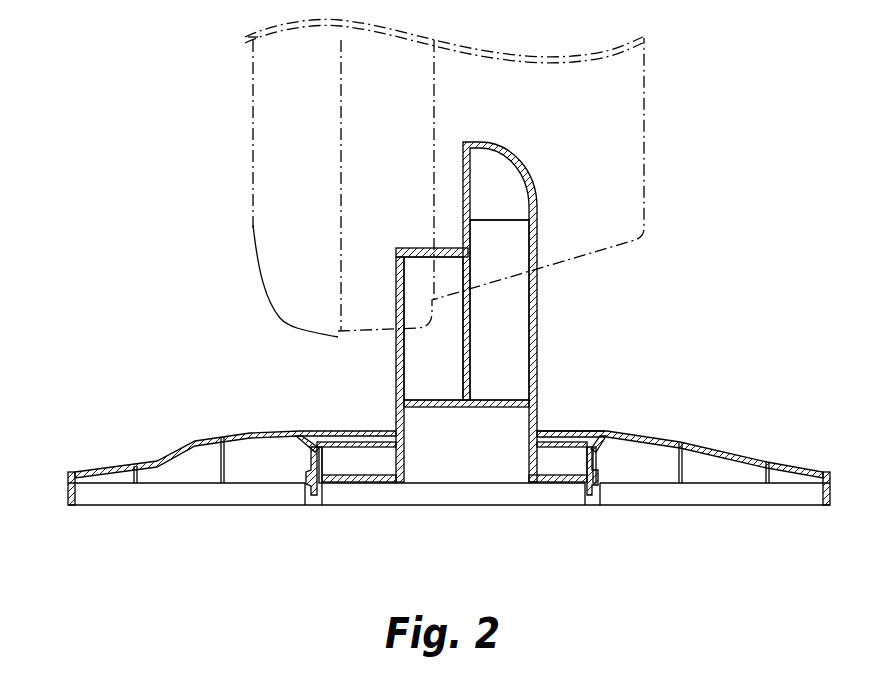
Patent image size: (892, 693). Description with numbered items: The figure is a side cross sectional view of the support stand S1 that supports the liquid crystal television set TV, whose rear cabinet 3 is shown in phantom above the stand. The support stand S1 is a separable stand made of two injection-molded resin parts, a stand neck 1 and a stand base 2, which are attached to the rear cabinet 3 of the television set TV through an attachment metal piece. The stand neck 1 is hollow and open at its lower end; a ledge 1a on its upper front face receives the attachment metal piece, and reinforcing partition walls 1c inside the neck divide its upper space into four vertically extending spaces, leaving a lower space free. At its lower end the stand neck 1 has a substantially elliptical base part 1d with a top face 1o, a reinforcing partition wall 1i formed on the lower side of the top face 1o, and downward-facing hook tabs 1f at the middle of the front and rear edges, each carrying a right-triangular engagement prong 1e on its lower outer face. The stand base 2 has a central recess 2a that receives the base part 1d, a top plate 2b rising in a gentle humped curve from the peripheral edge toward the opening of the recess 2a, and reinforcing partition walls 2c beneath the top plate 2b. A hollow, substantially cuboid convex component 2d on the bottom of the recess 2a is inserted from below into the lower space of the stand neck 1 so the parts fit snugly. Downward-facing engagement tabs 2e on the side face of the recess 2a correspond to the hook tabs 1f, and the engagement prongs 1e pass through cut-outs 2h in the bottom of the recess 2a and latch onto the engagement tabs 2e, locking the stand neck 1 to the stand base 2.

The liquid crystal television set TV is at (238, 63).
The rear cabinet 3 is at (648, 90).
The support stand S1 is at (156, 339).
The stand neck 1 is at (537, 303).
The ledge 1a is at (415, 247).
The reinforcing partition walls 1c is at (469, 347).
The base part 1d is at (570, 443).
The engagement prong 1e is at (302, 485).
The hook tab 1f is at (335, 452).
The reinforcing partition wall 1i is at (358, 465).
The top face 1o is at (586, 438).
The stand base 2 is at (665, 430).
The recess 2a is at (317, 430).
The top plate 2b is at (449, 468).
The reinforcing partition walls 2c is at (723, 467).
The convex component 2d is at (430, 398).
The engagement tab 2e is at (307, 457).
The cut-out 2h is at (327, 487).